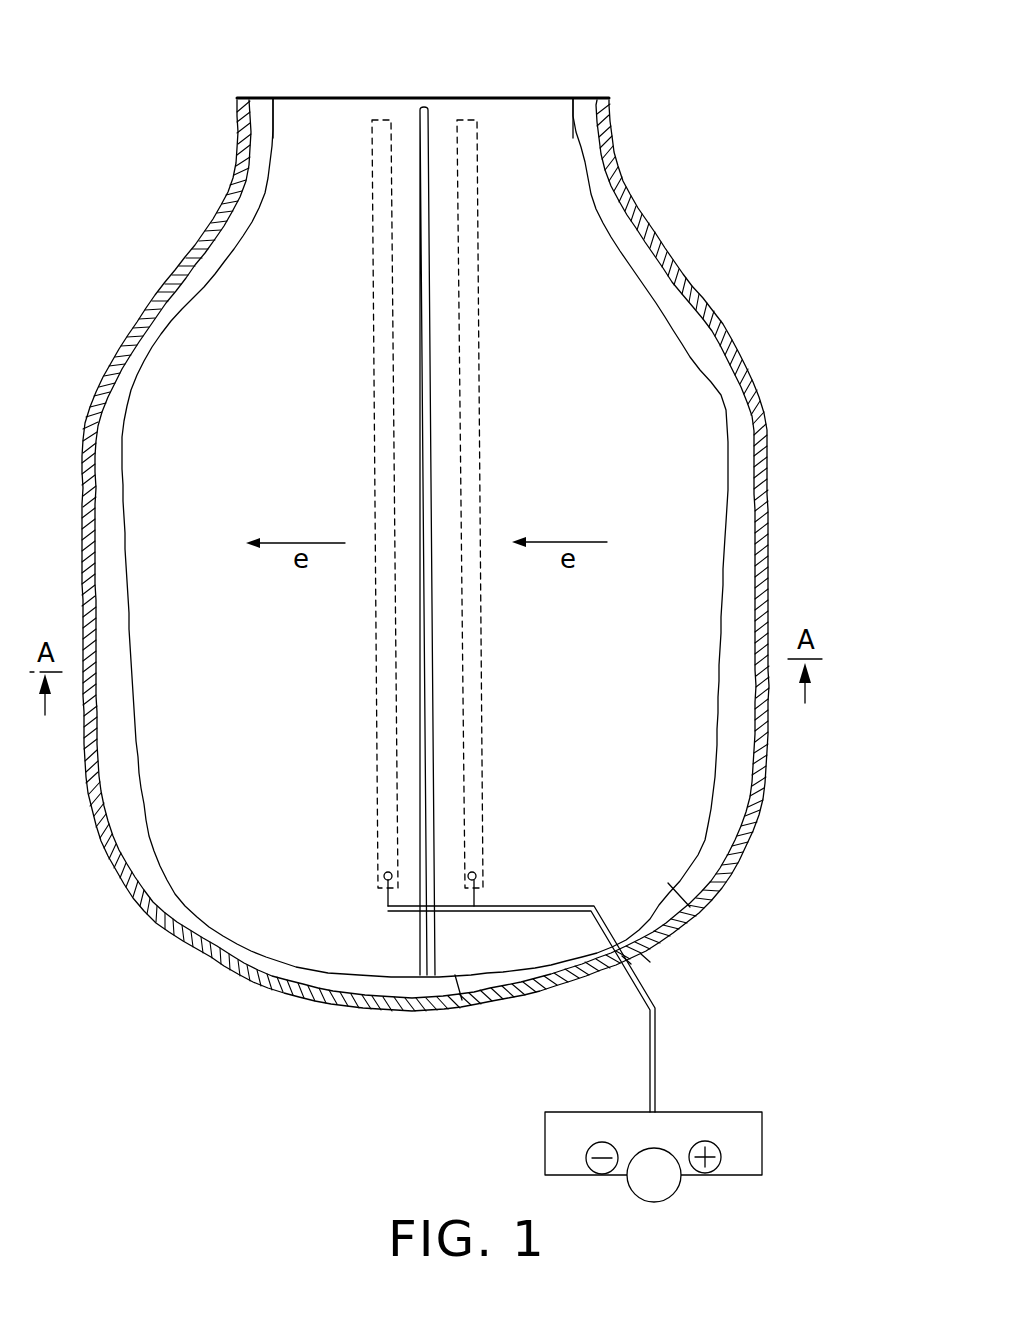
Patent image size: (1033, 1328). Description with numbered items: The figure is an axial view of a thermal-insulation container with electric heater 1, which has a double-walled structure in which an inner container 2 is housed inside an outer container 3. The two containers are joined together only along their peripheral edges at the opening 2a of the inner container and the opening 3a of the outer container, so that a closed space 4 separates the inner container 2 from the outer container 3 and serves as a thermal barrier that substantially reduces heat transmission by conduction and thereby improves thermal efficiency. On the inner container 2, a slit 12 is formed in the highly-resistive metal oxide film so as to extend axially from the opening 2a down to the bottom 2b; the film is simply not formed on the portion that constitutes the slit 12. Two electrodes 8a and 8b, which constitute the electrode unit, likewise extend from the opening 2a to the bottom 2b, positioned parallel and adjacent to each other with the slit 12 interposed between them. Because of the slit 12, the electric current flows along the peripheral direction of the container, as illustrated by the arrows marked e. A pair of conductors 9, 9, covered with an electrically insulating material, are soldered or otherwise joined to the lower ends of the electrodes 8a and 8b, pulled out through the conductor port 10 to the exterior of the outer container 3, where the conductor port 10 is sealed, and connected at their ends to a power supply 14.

The thermal-insulation container with electric heater 1 is at (686, 166).
The inner container 2 is at (697, 910).
The opening of the inner container 2a is at (473, 98).
The bottom of the inner container 2b is at (468, 1003).
The outer container 3 is at (740, 853).
The opening of the outer container 3a is at (592, 98).
The closed space 4 is at (763, 423).
The electrode 8a is at (380, 398).
The electrode 8b is at (470, 395).
The conductors 9 is at (386, 905).
The conductor port 10 is at (637, 960).
The slit 12 is at (420, 127).
The power supply 14 is at (677, 1190).